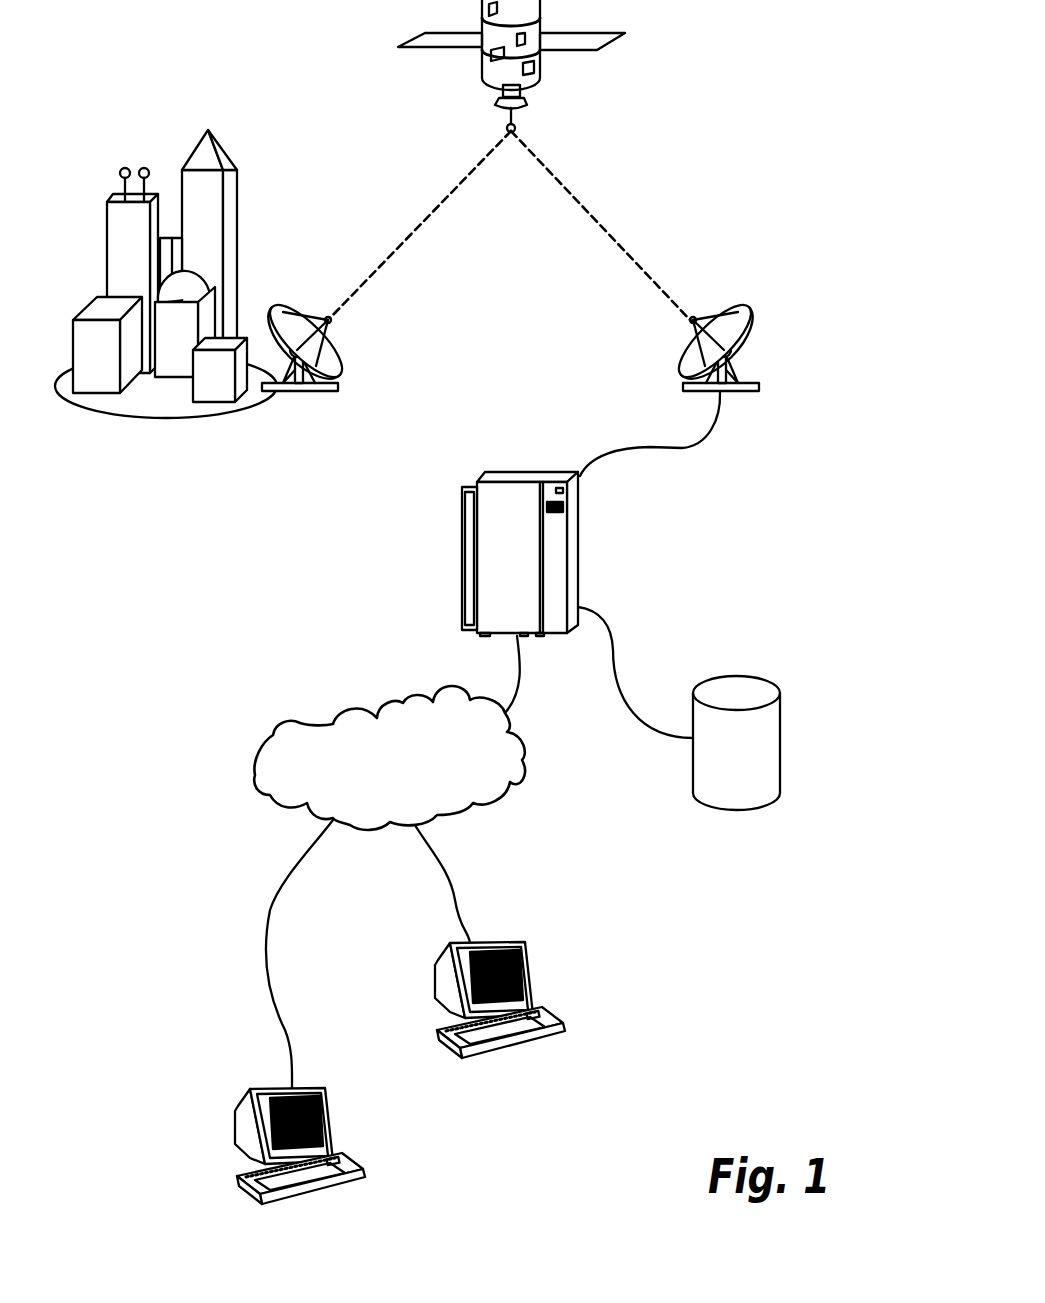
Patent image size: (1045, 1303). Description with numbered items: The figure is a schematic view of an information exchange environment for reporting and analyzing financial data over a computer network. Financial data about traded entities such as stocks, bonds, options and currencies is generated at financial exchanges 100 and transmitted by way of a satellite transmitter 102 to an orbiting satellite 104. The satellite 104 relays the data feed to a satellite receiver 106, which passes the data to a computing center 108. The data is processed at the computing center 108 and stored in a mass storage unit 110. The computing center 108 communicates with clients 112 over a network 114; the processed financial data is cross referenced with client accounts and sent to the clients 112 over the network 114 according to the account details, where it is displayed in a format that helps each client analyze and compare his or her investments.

The financial exchanges 100 is at (165, 418).
The satellite transmitter 102 is at (332, 391).
The satellite 104 is at (538, 90).
The satellite receiver 106 is at (757, 393).
The computing center 108 is at (462, 565).
The mass storage unit 110 is at (780, 733).
The clients 112 is at (565, 1025).
The network 114 is at (288, 724).